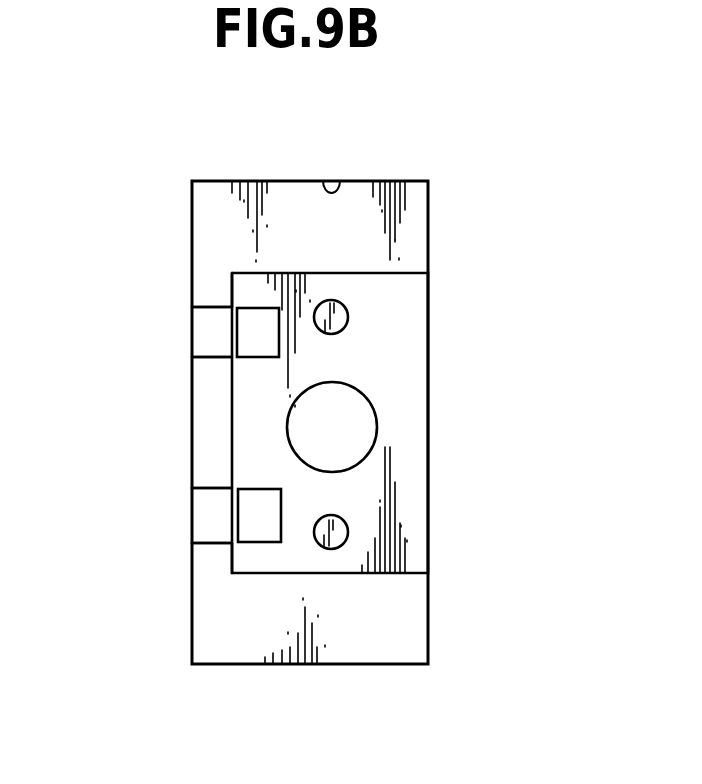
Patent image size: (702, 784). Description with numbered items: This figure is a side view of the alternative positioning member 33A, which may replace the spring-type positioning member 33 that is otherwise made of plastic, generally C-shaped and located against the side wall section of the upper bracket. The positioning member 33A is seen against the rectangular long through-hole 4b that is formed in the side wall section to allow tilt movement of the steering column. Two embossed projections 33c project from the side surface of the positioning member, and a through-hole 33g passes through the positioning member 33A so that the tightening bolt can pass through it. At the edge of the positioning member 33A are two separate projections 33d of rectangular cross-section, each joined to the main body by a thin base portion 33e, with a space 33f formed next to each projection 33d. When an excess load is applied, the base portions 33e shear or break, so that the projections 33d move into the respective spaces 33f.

The rectangular long through-hole 4b is at (340, 182).
The positioning member 33 is at (418, 558).
The positioning member 33A is at (418, 363).
The projections 33c is at (348, 314).
The projections 33d is at (212, 343).
The thin base portions 33e is at (233, 303).
The spaces 33f is at (260, 309).
The through-hole 33g is at (364, 416).